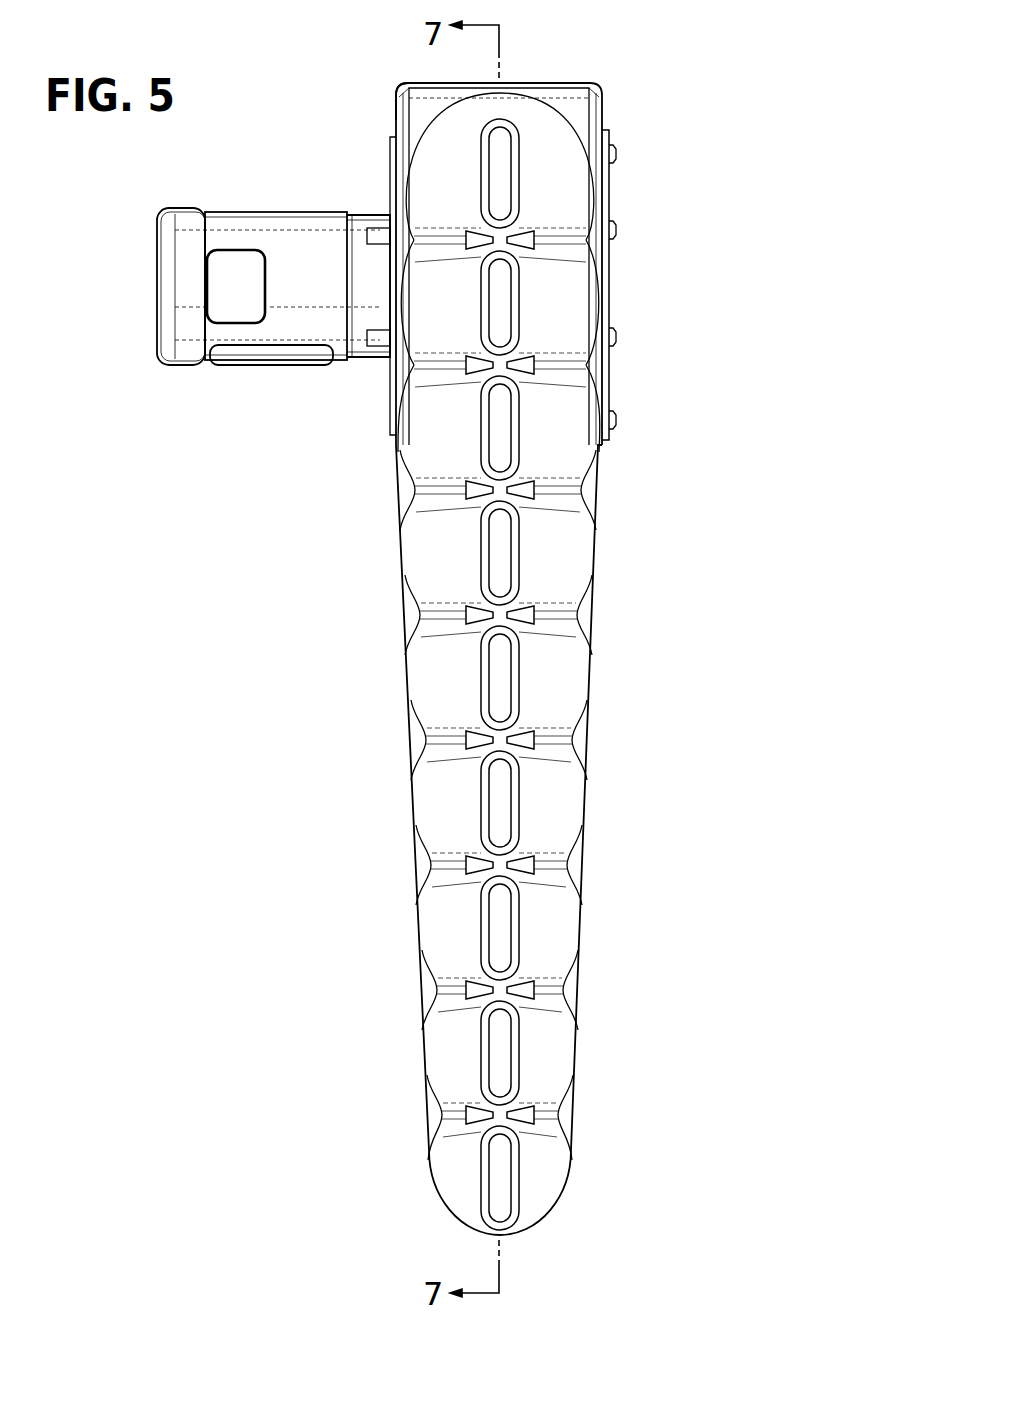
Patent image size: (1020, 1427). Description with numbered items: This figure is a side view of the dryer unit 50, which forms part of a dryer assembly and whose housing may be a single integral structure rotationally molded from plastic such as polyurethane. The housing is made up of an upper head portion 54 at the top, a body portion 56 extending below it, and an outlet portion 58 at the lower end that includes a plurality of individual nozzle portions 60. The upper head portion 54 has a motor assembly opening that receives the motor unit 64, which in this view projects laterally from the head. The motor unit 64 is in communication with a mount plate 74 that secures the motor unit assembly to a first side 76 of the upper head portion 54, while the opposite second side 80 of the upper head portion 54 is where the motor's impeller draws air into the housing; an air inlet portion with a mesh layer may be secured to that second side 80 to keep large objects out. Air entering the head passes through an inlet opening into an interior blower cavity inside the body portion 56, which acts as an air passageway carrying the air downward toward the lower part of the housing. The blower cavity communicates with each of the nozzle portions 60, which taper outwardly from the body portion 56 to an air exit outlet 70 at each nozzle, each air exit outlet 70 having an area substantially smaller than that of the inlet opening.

The dryer unit 50 is at (617, 62).
The upper head portion 54 is at (603, 110).
The body portion 56 is at (598, 595).
The outlet portion 58 is at (575, 676).
The nozzle portions 60 is at (425, 675).
The motor unit 64 is at (293, 320).
The air exit outlet 70 is at (500, 802).
The mount plate 74 is at (392, 178).
The first side 76 is at (404, 106).
The second side 80 is at (609, 208).